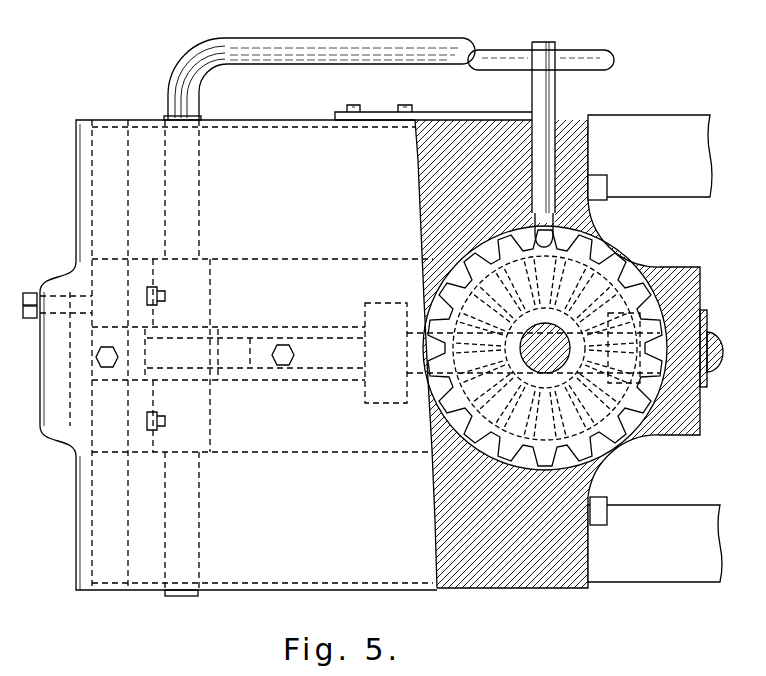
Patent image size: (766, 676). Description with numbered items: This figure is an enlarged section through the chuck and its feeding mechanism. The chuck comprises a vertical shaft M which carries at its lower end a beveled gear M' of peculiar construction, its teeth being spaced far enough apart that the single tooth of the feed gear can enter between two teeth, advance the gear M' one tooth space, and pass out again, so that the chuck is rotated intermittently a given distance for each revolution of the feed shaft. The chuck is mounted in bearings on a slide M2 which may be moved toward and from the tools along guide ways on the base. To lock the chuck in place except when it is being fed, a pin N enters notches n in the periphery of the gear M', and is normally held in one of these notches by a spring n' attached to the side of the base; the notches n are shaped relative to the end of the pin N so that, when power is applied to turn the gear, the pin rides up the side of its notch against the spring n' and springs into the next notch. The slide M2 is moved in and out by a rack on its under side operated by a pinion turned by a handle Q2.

The handle Q2 is at (322, 44).
The spring n' is at (433, 100).
The pin N is at (583, 86).
The notches n is at (543, 320).
The vertical shaft M is at (545, 337).
The beveled gear M' is at (507, 348).
The slide M2 is at (372, 355).